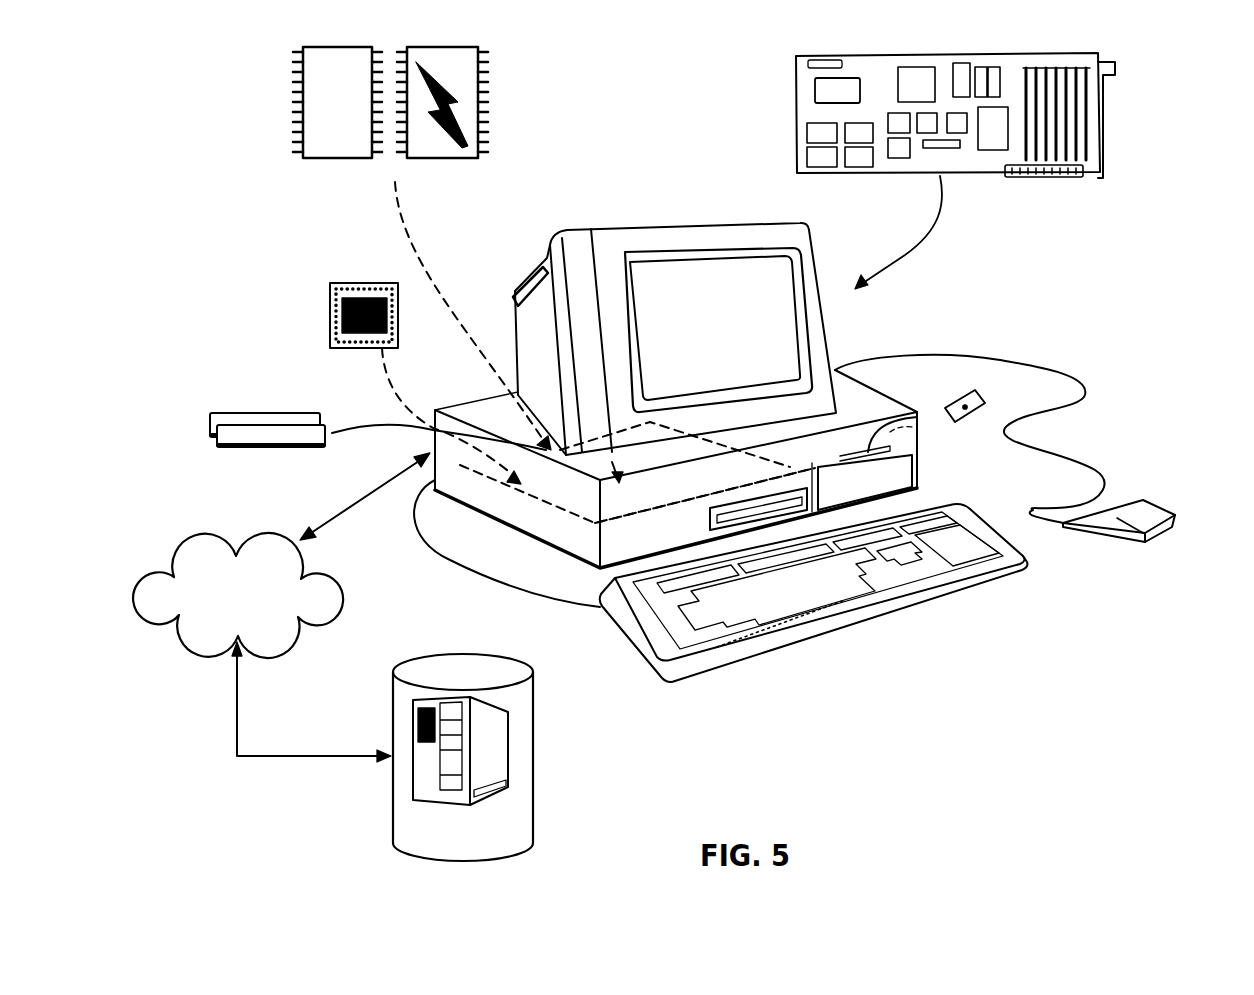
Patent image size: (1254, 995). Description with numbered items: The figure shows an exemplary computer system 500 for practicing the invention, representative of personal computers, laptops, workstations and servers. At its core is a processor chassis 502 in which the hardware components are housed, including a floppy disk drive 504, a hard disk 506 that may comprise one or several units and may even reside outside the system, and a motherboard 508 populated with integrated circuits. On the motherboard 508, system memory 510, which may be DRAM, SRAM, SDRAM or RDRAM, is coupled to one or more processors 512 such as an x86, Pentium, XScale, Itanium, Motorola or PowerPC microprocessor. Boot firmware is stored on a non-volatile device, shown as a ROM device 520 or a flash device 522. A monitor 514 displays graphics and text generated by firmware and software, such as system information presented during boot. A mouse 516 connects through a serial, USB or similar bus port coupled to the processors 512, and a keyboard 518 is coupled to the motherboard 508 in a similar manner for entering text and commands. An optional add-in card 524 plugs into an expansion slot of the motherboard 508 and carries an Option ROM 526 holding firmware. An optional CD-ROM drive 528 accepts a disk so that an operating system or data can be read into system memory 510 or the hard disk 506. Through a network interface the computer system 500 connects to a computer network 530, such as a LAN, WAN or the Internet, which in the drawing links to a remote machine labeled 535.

The computer system 500 is at (794, 732).
The processor chassis 502 is at (935, 430).
The floppy disk drive 504 is at (878, 444).
The hard disk 506 is at (893, 476).
The motherboard 508 is at (538, 500).
The system memory 510 is at (240, 418).
The processor 512 is at (398, 334).
The monitor 514 is at (815, 287).
The mouse 516 is at (1150, 543).
The keyboard 518 is at (912, 606).
The ROM device 520 is at (338, 148).
The flash device 522 is at (445, 147).
The add-in card 524 is at (1103, 105).
The Option ROM 526 is at (820, 95).
The CD-ROM drive 528 is at (704, 521).
The computer network 530 is at (277, 641).
The remote computer 535 is at (533, 718).